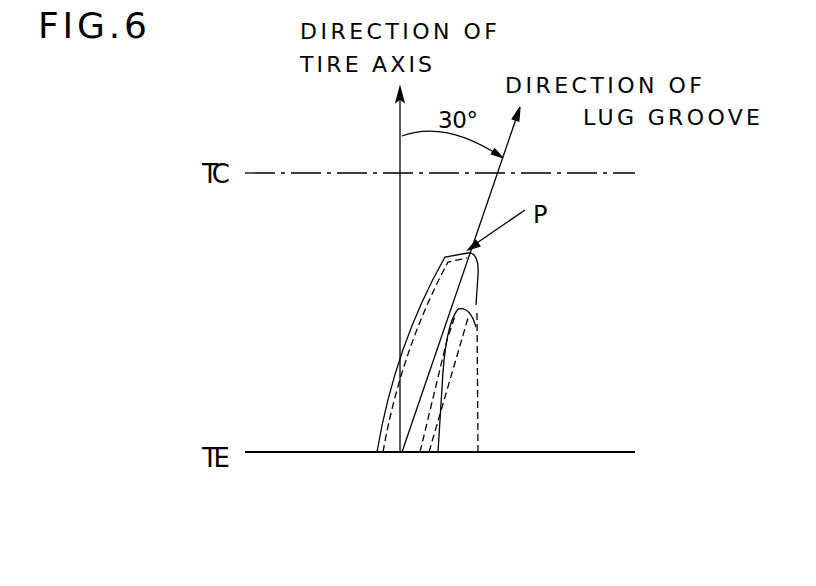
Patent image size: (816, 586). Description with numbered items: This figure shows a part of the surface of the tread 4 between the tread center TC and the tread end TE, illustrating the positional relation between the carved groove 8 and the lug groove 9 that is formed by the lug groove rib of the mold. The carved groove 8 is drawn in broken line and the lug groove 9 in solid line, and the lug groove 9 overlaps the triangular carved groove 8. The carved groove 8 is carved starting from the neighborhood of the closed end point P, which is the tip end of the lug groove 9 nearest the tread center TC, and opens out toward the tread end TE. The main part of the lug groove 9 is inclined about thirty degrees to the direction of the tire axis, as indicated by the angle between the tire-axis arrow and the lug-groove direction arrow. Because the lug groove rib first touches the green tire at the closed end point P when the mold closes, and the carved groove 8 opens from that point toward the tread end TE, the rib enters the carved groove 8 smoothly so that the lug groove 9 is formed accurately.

The tread 4 is at (257, 304).
The carved groove 8 is at (452, 437).
The lug groove 9 is at (393, 392).